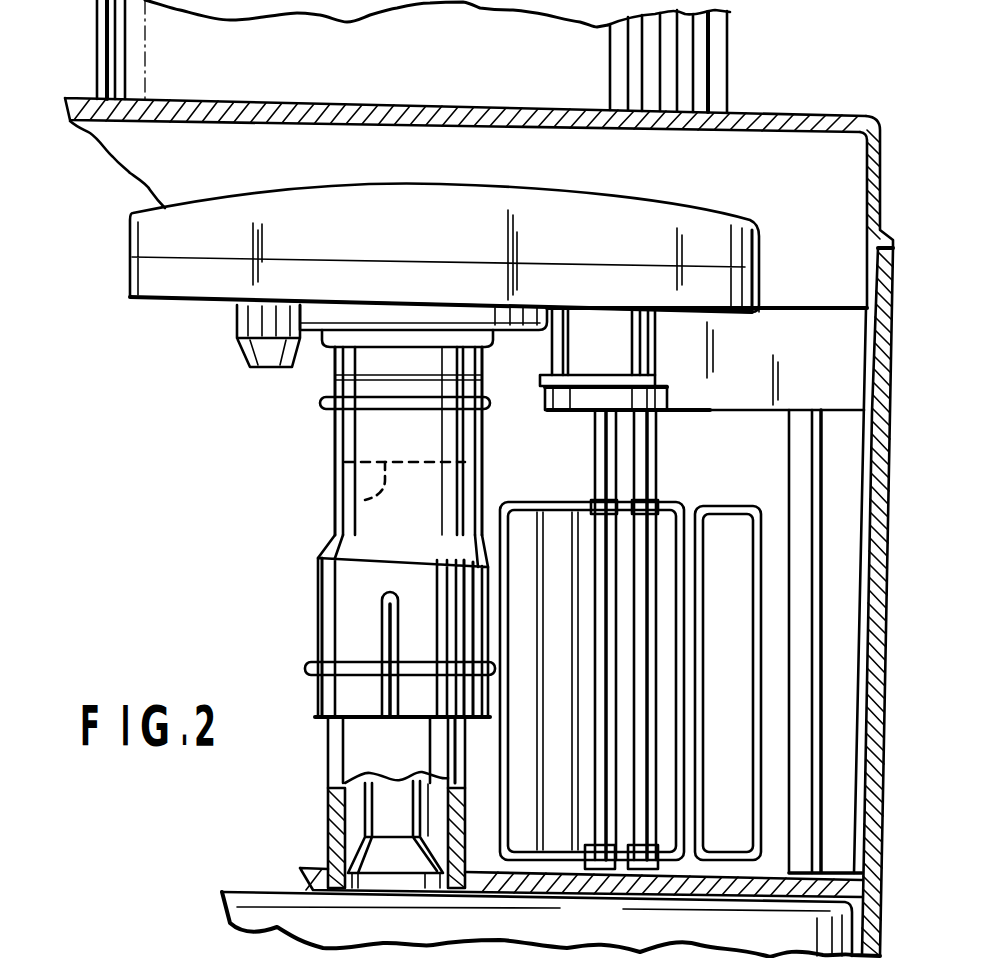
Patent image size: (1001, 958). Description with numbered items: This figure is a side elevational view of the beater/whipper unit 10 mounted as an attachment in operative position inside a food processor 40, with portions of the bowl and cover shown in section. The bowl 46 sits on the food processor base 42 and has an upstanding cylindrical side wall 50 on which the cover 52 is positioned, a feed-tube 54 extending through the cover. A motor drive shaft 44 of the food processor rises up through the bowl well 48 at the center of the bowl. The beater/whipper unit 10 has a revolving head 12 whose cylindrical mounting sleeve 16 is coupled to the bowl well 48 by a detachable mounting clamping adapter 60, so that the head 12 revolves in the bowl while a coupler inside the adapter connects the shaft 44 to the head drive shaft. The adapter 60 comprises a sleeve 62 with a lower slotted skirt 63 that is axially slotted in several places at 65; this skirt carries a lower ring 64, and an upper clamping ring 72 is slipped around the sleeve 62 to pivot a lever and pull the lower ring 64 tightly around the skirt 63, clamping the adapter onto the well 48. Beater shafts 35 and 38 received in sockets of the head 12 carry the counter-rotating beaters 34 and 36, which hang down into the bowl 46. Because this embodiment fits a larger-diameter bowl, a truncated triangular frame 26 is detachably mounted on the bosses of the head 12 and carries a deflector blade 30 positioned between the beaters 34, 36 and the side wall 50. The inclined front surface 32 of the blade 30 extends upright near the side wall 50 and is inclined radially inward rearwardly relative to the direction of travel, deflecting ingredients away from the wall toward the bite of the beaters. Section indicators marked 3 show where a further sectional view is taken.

The beater/whipper unit 10 is at (128, 402).
The revolving head 12 is at (277, 197).
The cylindrical mounting sleeve 16 is at (330, 507).
The truncated triangular frame 26 is at (796, 336).
The deflector blade 30 is at (878, 720).
The inclined front surface 32 is at (838, 768).
The beater 34 is at (521, 502).
The beater shaft 35 is at (597, 452).
The beater 36 is at (725, 508).
The beater shaft 38 is at (657, 455).
The food processor 40 is at (150, 832).
The food processor base 42 is at (250, 890).
The motor drive shaft 44 is at (387, 806).
The bowl 46 is at (898, 562).
The bowl well 48 is at (328, 793).
The cylindrical side wall 50 is at (890, 492).
The cover 52 is at (812, 120).
The feed-tube 54 is at (723, 40).
The detachable mounting clamping adapter 60 is at (290, 539).
The sleeve 62 is at (370, 438).
The lower slotted skirt 63 is at (352, 605).
The lower ring 64 is at (306, 668).
The axial slots 65 is at (385, 631).
The upper clamping ring 72 is at (320, 400).
The section line 3- 3 is at (803, 657).